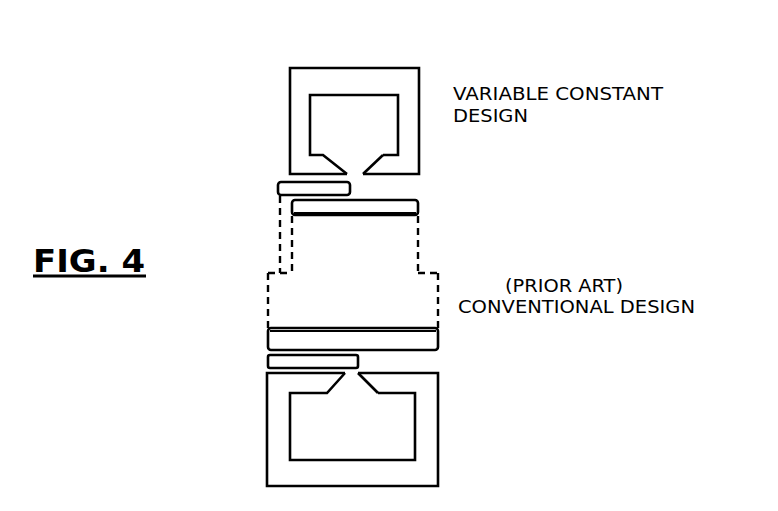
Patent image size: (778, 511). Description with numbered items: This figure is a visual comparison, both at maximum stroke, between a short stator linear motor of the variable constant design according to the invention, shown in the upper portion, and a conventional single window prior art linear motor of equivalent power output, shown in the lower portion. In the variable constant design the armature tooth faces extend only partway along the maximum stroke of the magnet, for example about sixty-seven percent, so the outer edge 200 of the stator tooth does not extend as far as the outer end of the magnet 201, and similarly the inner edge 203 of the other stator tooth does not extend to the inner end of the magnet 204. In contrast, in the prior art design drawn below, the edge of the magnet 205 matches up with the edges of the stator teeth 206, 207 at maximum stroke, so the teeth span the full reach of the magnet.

The outer edge of the stator tooth 200 is at (302, 167).
The outer end of the magnet 201 is at (278, 188).
The inner edge of the other stator tooth 203 is at (383, 165).
The inner end of the magnet 204 is at (350, 186).
The edge of the magnet 205 is at (278, 358).
The stator tooth 206 is at (280, 385).
The stator tooth 207 is at (372, 383).